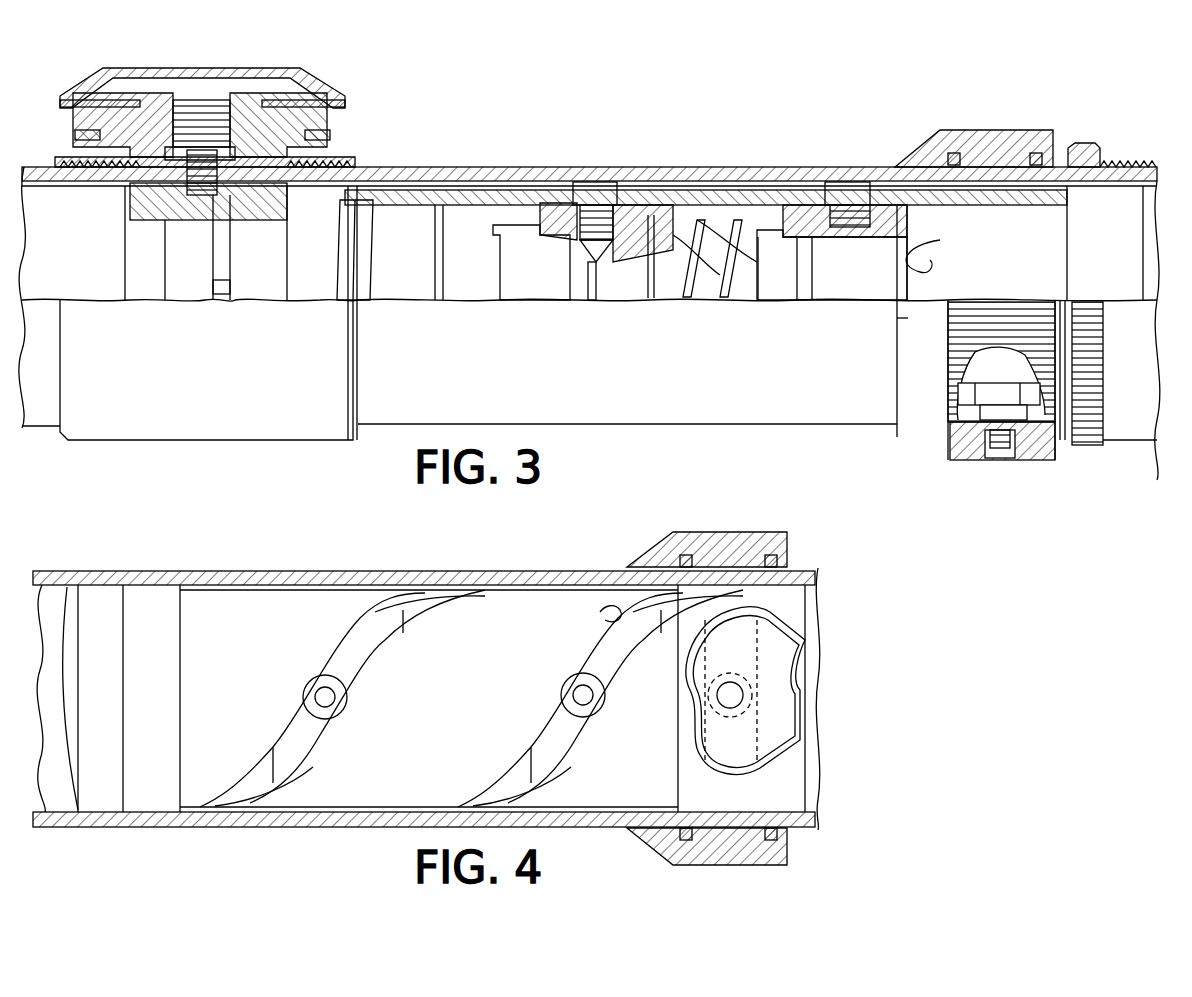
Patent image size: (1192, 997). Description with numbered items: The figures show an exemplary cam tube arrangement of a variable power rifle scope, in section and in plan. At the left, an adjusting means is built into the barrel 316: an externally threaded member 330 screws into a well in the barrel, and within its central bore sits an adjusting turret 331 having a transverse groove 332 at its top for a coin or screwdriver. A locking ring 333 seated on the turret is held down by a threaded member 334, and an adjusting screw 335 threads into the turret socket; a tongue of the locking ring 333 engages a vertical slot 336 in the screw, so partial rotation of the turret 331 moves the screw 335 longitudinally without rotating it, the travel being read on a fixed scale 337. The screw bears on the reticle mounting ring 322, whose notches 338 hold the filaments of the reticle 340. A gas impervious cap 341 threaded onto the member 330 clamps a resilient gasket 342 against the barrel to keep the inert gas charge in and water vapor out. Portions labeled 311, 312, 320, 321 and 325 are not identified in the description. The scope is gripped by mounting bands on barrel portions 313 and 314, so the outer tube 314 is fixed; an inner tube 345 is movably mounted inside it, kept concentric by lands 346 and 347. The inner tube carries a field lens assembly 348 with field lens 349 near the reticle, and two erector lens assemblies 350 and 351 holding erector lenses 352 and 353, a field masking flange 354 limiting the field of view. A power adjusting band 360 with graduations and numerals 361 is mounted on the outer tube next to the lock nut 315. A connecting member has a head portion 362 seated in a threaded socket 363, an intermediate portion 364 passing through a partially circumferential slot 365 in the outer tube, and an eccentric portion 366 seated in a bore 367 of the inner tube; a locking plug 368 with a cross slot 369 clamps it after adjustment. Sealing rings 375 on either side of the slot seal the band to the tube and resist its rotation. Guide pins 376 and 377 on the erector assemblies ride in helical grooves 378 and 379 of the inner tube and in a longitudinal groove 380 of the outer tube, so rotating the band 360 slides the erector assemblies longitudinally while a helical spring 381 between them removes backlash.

In FIG. 3, the tubular body 311 is at (1140, 430).
In FIG. 3, the cap assembly 312 is at (241, 204).
In FIG. 3, the barrel portion 313 is at (42, 432).
In FIG. 3, the outer tube portion 314 is at (628, 395).
In FIG. 4, the outer tube portion 314 is at (395, 572).
In FIG. 3, the lock nut 315 is at (1085, 148).
In FIG. 3, the barrel 316 is at (230, 418).
In FIG. 3, the body portion 320 is at (275, 250).
In FIG. 3, the body portion 321 is at (145, 262).
In FIG. 3, the reticle mounting ring 322 is at (195, 278).
In FIG. 3, the cap 325 is at (241, 197).
In FIG. 3, the externally threaded member 330 is at (308, 122).
In FIG. 3, the adjusting turret 331 is at (160, 98).
In FIG. 3, the transverse groove 332 is at (205, 92).
In FIG. 3, the locking ring 333 is at (150, 180).
In FIG. 3, the threaded member 334 is at (170, 183).
In FIG. 3, the adjusting screw 335 is at (215, 118).
In FIG. 3, the vertical slot 336 is at (200, 188).
In FIG. 3, the fixed scale 337 is at (105, 100).
In FIG. 3, the notches 338 is at (228, 290).
In FIG. 3, the reticle 340 is at (205, 300).
In FIG. 3, the gas impervious cap 341 is at (345, 100).
In FIG. 3, the resilient gasket 342 is at (330, 135).
In FIG. 3, the inner tube 345 is at (722, 200).
In FIG. 4, the inner tube 345 is at (302, 612).
In FIG. 4, the land 346 is at (153, 778).
In FIG. 4, the land 347 is at (795, 783).
In FIG. 3, the field lens assembly 348 is at (412, 222).
In FIG. 3, the field lens 349 is at (355, 245).
In FIG. 4, the field lens 349 is at (63, 665).
In FIG. 3, the erector lens assembly 350 is at (640, 220).
In FIG. 4, the erector lens assembly 350 is at (295, 737).
In FIG. 3, the erector lens assembly 351 is at (812, 220).
In FIG. 4, the erector lens assembly 351 is at (555, 742).
In FIG. 3, the erector lens 352 is at (518, 272).
In FIG. 3, the erector lens 353 is at (780, 297).
In FIG. 3, the field masking flange 354 is at (593, 270).
In FIG. 3, the power adjusting band 360 is at (1007, 140).
In FIG. 4, the power adjusting band 360 is at (655, 547).
In FIG. 3, the graduations and numerals 361 is at (910, 335).
In FIG. 3, the cylindrical head portion 362 is at (960, 455).
In FIG. 3, the internally threaded socket 363 is at (1015, 465).
In FIG. 3, the intermediate concentric cylindrical portion 364 is at (985, 412).
In FIG. 4, the intermediate concentric cylindrical portion 364 is at (760, 725).
In FIG. 3, the partially circumferential slot 365 is at (1030, 405).
In FIG. 4, the partially circumferential slot 365 is at (772, 760).
In FIG. 3, the inner eccentric portion 366 is at (985, 395).
In FIG. 4, the inner eccentric portion 366 is at (735, 695).
In FIG. 3, the cylindrical bore 367 is at (1000, 405).
In FIG. 4, the cylindrical bore 367 is at (712, 700).
In FIG. 3, the locking plug 368 is at (980, 465).
In FIG. 3, the cross slot 369 is at (1002, 462).
In FIG. 3, the sealing rings 375 is at (954, 160).
In FIG. 4, the sealing rings 375 is at (770, 560).
In FIG. 3, the guide pin 376 is at (598, 192).
In FIG. 4, the guide pin 376 is at (340, 705).
In FIG. 3, the guide pin 377 is at (850, 190).
In FIG. 4, the guide pin 377 is at (566, 690).
In FIG. 3, the helical groove 378 is at (712, 262).
In FIG. 4, the helical groove 378 is at (392, 650).
In FIG. 3, the helical groove 379 is at (935, 268).
In FIG. 4, the helical groove 379 is at (610, 610).
In FIG. 3, the longitudinal groove 380 is at (538, 182).
In FIG. 3, the helical spring 381 is at (745, 235).